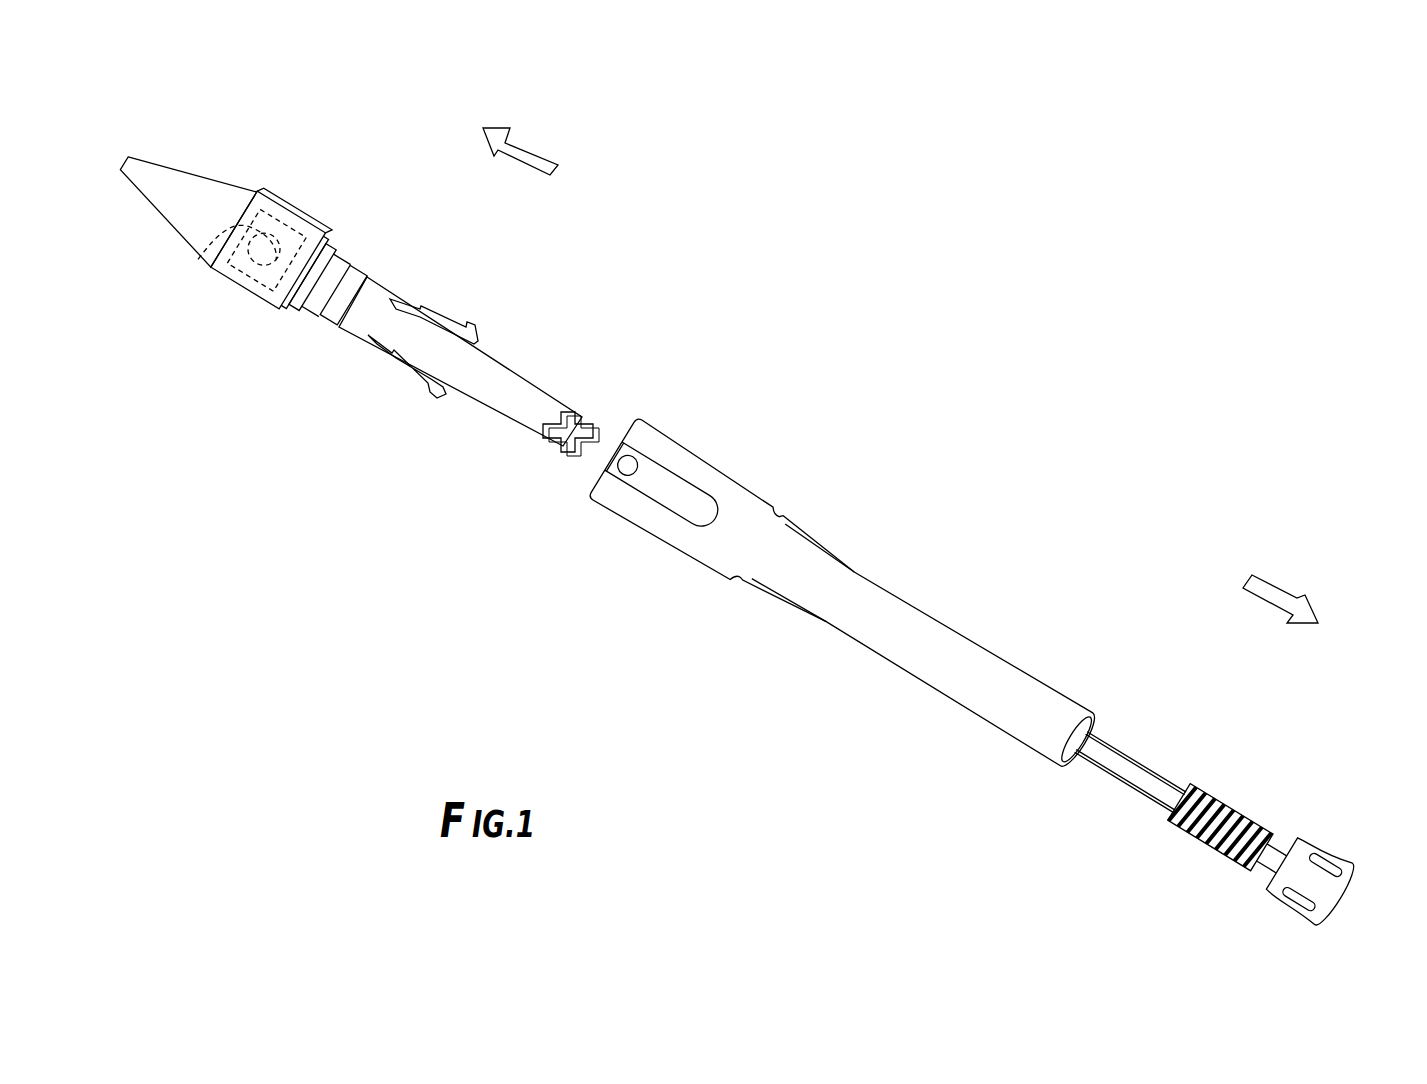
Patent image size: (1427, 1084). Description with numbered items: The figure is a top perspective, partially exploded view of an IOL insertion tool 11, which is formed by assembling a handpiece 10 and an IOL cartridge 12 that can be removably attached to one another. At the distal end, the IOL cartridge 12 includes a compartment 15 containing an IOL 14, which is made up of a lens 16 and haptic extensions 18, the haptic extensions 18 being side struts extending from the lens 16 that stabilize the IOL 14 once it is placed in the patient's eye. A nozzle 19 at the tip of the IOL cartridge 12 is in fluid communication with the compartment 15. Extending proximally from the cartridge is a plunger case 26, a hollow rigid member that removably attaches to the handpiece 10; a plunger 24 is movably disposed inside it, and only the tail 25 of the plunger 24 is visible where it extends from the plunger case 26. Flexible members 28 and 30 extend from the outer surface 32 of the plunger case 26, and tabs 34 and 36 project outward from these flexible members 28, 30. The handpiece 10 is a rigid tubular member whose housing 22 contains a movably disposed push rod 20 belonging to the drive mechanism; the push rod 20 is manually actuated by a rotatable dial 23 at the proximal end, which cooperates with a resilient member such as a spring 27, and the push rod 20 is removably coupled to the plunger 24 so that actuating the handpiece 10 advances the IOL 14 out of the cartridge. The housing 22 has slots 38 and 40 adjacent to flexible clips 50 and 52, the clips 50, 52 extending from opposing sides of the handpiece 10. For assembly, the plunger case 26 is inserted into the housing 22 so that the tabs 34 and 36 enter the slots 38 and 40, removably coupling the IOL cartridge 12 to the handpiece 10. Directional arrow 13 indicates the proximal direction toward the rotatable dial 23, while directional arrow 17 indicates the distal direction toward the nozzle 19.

The handpiece 10 is at (876, 678).
The IOL insertion tool 11 is at (655, 283).
The IOL cartridge 12 is at (280, 185).
The directional arrow 13 is at (1265, 600).
The IOL 14 is at (258, 228).
The compartment 15 is at (237, 287).
The lens 16 is at (272, 222).
The directional arrow 17 is at (540, 142).
The haptic extensions 18 is at (207, 247).
The nozzle 19 is at (145, 218).
The push rod 20 is at (1108, 773).
The housing 22 is at (980, 644).
The rotatable dial 23 is at (1338, 858).
The plunger 24 is at (587, 410).
The tail 25 is at (547, 440).
The plunger case 26 is at (512, 367).
The spring 27 is at (1208, 842).
The flexible member 28 is at (383, 373).
The flexible member 30 is at (447, 306).
The outer surface 32 is at (370, 320).
The tab 34 is at (425, 395).
The tab 36 is at (470, 330).
The slot 38 is at (725, 584).
The slot 40 is at (788, 503).
The flexible clip 50 is at (745, 582).
The flexible clip 52 is at (800, 527).